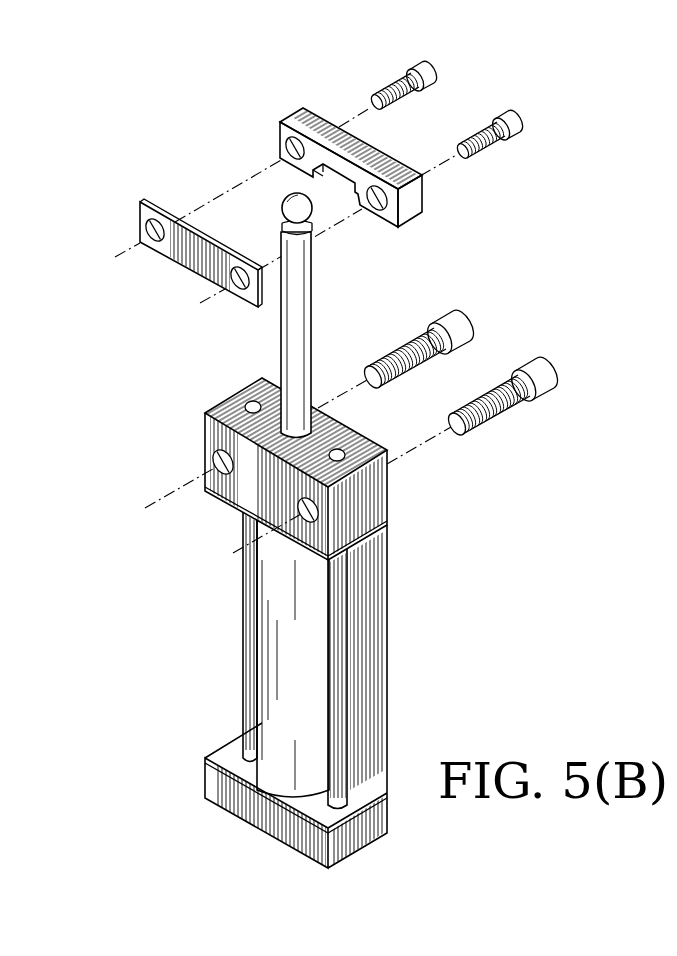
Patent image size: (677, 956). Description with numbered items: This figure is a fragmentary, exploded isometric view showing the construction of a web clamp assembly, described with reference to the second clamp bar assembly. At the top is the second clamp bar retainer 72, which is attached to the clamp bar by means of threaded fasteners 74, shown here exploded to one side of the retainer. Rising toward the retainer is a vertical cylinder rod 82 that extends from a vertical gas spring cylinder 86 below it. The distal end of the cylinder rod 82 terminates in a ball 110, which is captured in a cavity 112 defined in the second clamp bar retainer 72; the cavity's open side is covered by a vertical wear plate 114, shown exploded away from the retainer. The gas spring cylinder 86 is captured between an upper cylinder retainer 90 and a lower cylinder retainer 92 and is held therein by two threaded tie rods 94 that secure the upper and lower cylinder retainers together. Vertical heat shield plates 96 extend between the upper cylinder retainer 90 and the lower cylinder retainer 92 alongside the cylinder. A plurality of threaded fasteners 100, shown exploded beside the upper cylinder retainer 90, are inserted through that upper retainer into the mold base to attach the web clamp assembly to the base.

The second clamp bar retainer 72 is at (317, 122).
The threaded fasteners 74 is at (427, 76).
The cylinder rod 82 is at (297, 307).
The gas spring cylinder 86 is at (285, 652).
The upper cylinder retainer 90 is at (357, 507).
The lower cylinder retainer 92 is at (252, 805).
The threaded tie rods 94 is at (340, 610).
The vertical heat shield plates 96 is at (367, 688).
The threaded fasteners 100 is at (540, 378).
The ball 110 is at (293, 203).
The cavity 112 is at (341, 177).
The vertical wear plate 114 is at (195, 257).